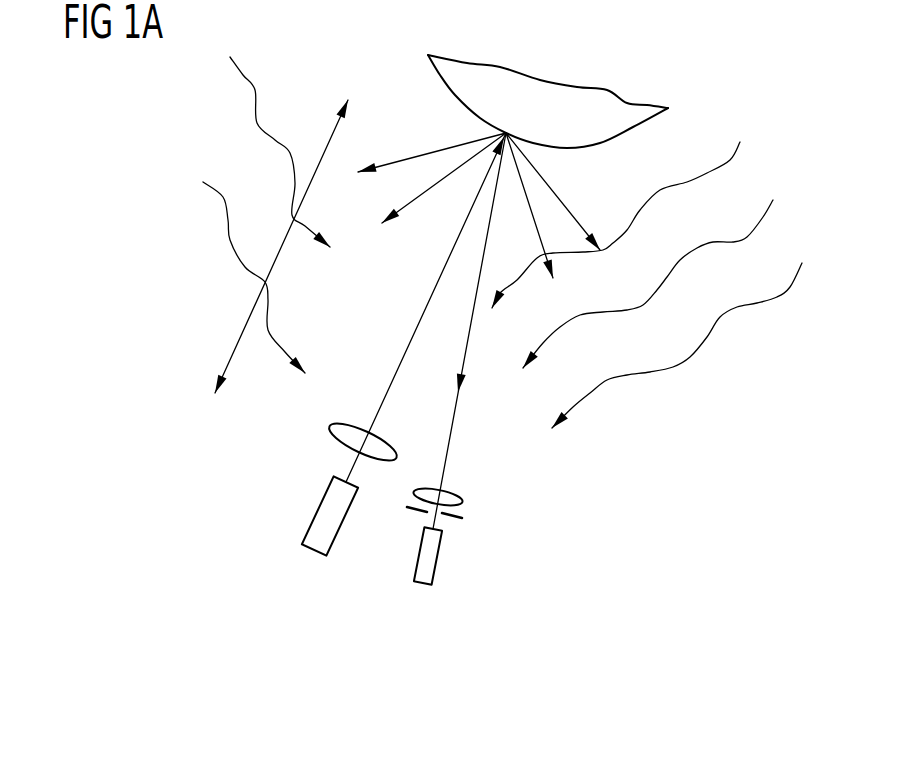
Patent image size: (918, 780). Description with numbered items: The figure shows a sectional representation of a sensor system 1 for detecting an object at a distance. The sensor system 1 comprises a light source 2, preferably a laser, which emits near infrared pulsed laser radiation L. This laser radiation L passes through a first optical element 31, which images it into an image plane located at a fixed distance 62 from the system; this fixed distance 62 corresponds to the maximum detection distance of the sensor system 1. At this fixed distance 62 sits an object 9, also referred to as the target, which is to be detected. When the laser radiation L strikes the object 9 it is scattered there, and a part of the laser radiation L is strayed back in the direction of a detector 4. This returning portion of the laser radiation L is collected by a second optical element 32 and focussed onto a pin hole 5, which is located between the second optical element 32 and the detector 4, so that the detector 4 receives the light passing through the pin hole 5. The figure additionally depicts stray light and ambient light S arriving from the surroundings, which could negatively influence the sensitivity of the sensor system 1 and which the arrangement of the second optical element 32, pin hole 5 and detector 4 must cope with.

The sensor system 1 is at (630, 500).
The light source 2 is at (322, 513).
The detector 4 is at (433, 562).
The pin hole 5 is at (462, 520).
The object 9 is at (614, 113).
The first optical element 31 is at (333, 430).
The second optical element 32 is at (463, 500).
The fixed distance 62 is at (283, 246).
The laser radiation L is at (410, 335).
The stray light and ambient light S is at (748, 240).